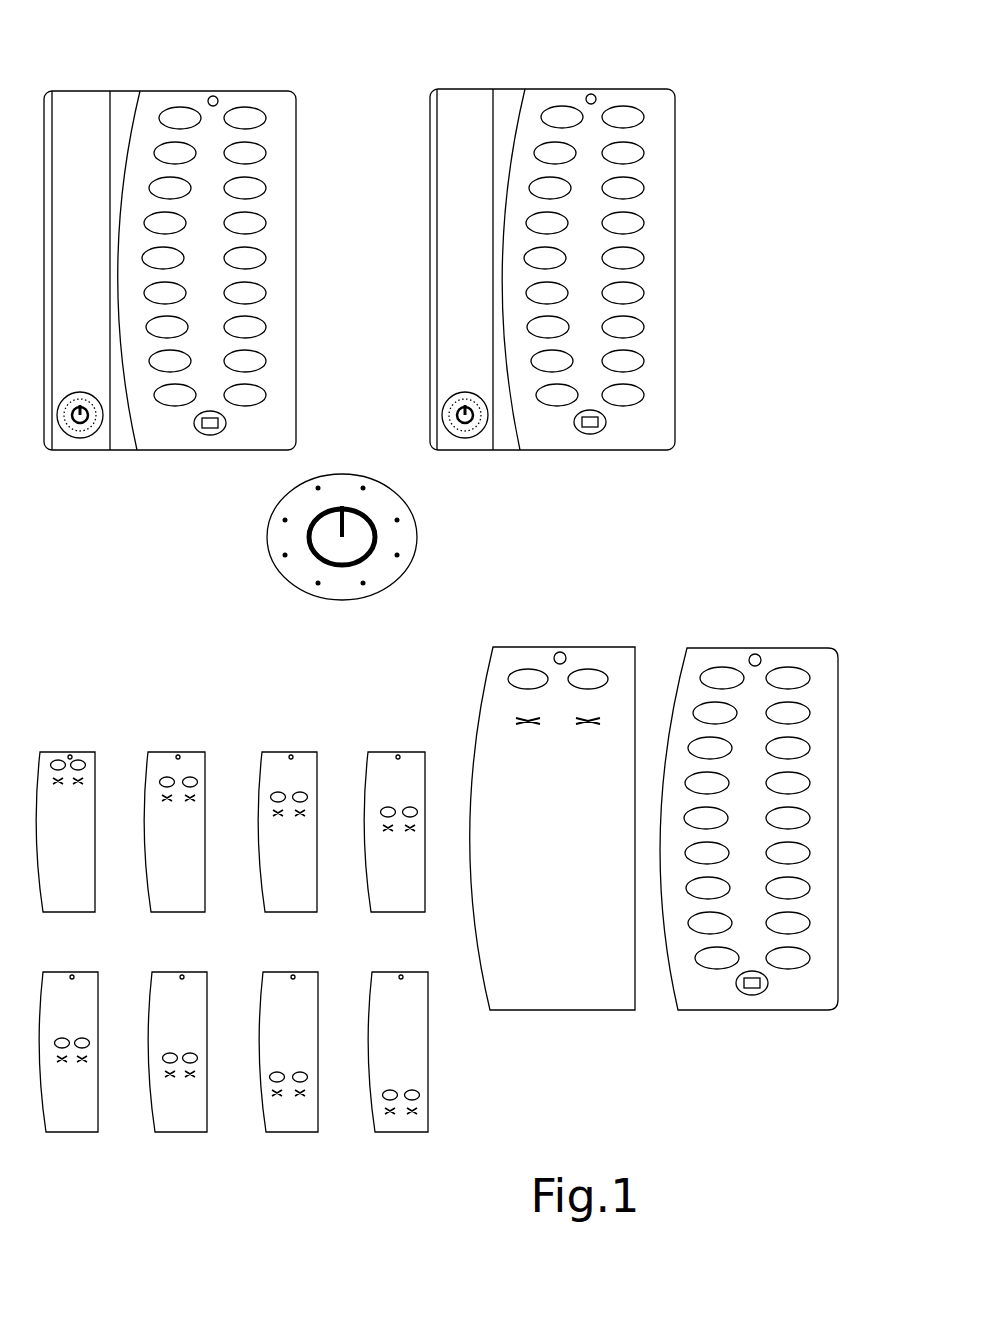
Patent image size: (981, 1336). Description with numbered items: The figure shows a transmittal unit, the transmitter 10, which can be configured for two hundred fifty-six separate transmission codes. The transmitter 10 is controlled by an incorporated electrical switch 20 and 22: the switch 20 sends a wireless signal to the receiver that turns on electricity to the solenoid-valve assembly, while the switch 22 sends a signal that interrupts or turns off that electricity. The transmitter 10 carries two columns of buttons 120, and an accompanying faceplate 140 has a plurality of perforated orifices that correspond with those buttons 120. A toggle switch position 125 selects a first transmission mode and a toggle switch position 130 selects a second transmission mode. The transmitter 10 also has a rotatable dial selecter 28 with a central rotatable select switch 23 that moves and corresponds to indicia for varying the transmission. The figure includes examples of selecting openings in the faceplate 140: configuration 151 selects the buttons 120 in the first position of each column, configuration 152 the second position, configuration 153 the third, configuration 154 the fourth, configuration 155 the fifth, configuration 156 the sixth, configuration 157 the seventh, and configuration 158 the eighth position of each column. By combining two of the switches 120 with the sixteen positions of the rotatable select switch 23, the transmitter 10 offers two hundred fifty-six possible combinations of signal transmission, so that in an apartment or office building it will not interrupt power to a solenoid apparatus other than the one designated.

The transmitter 10 is at (425, 165).
The switch 20 is at (532, 671).
The switch 22 is at (585, 672).
The central rotatable select switch 23 is at (347, 528).
The rotatable dial selecter 28 is at (88, 433).
The buttons 120 is at (657, 118).
The toggle switch position 125 is at (598, 430).
The toggle switch position 130 is at (583, 431).
The faceplate 140 is at (278, 277).
The configuration 151 is at (593, 977).
The configuration 152 is at (200, 752).
The configuration 153 is at (312, 752).
The configuration 154 is at (417, 752).
The configuration 155 is at (52, 1132).
The configuration 156 is at (162, 1132).
The configuration 157 is at (277, 1128).
The configuration 158 is at (385, 1132).